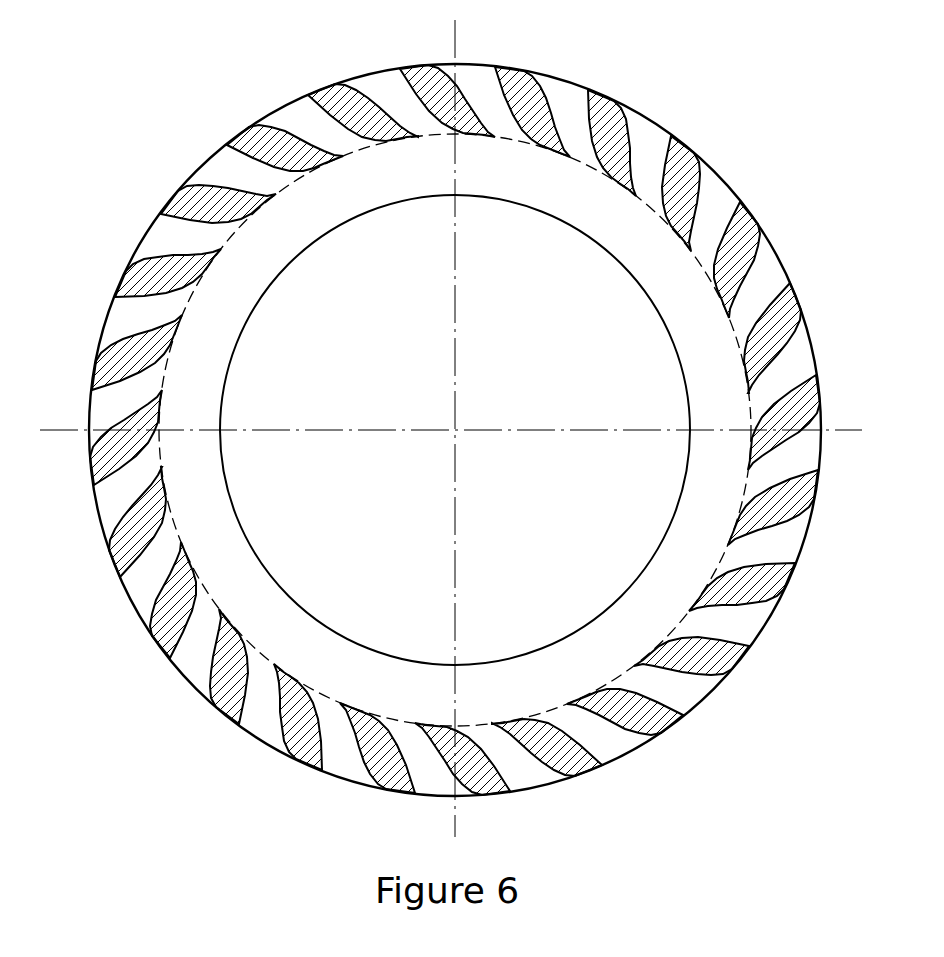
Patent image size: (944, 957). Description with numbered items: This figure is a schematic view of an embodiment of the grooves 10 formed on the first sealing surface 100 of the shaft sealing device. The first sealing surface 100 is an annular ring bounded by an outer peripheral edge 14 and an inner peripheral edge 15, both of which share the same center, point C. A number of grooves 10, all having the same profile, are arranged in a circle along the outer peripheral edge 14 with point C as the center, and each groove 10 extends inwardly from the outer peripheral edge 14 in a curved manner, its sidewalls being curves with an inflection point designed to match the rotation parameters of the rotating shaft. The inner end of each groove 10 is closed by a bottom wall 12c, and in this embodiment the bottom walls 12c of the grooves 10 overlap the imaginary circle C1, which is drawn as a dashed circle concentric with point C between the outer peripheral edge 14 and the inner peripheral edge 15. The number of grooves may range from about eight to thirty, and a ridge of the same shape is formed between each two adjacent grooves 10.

The groove 10 is at (245, 143).
The bottom wall 12c is at (393, 125).
The outer peripheral edge 14 is at (103, 325).
The inner peripheral edge 15 is at (237, 512).
The first sealing surface 100 is at (760, 610).
The center point C is at (451, 428).
The imaginary circle C1 is at (607, 125).